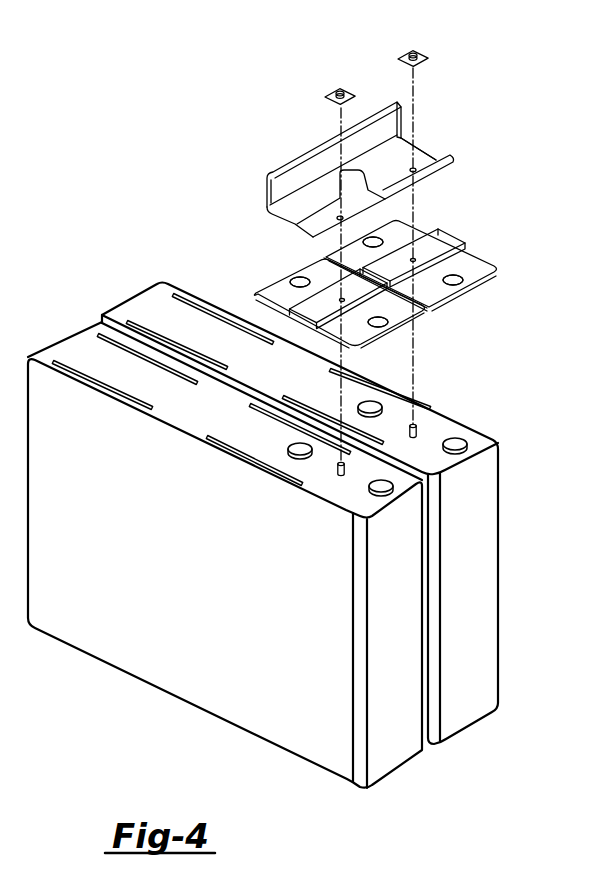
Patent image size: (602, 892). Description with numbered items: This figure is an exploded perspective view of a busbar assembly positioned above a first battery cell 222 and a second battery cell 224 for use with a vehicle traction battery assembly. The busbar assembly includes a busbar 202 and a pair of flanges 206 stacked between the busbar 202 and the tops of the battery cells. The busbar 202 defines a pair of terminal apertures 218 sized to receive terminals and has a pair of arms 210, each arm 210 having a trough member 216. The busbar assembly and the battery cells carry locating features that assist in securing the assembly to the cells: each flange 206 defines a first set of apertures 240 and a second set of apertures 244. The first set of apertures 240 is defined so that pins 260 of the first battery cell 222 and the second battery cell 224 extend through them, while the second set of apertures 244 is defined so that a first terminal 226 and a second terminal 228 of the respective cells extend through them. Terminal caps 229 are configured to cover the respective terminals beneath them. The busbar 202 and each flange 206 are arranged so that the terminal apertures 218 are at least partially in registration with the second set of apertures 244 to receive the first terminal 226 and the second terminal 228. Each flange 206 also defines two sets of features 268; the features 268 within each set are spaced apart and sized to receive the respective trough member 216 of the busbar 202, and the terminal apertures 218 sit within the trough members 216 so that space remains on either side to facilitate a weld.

The busbar 202 is at (380, 104).
The flange 206 is at (272, 287).
The arm 210 is at (295, 207).
The trough member 216 is at (302, 240).
The terminal aperture 218 is at (339, 214).
The first battery cell 222 is at (383, 742).
The second battery cell 224 is at (460, 700).
The first terminal 226 is at (334, 473).
The second terminal 228 is at (417, 433).
The terminal cap 229 is at (328, 90).
The first set of apertures 240 is at (300, 277).
The second set of apertures 244 is at (270, 322).
The pin 260 is at (367, 405).
The feature 268 is at (290, 313).